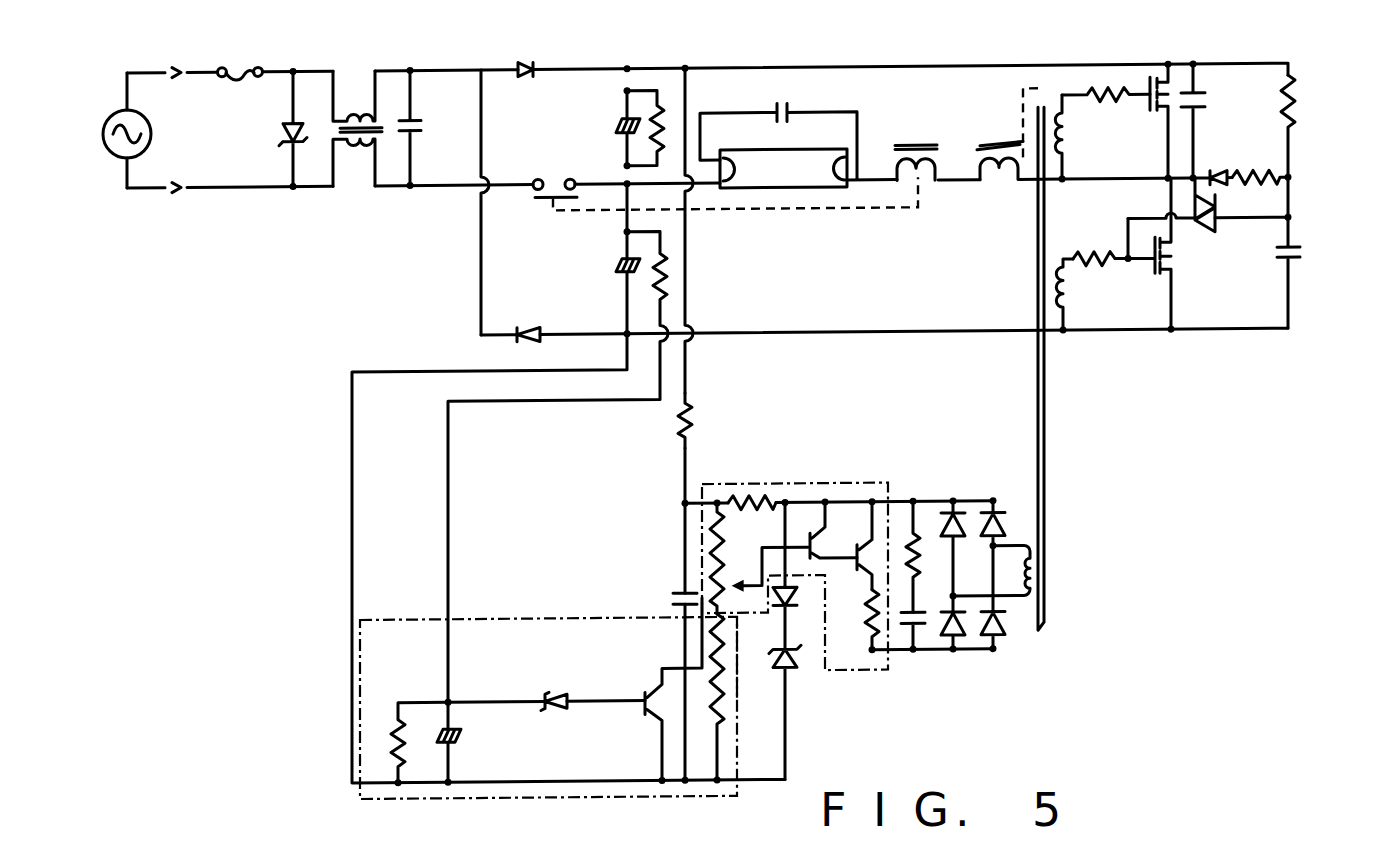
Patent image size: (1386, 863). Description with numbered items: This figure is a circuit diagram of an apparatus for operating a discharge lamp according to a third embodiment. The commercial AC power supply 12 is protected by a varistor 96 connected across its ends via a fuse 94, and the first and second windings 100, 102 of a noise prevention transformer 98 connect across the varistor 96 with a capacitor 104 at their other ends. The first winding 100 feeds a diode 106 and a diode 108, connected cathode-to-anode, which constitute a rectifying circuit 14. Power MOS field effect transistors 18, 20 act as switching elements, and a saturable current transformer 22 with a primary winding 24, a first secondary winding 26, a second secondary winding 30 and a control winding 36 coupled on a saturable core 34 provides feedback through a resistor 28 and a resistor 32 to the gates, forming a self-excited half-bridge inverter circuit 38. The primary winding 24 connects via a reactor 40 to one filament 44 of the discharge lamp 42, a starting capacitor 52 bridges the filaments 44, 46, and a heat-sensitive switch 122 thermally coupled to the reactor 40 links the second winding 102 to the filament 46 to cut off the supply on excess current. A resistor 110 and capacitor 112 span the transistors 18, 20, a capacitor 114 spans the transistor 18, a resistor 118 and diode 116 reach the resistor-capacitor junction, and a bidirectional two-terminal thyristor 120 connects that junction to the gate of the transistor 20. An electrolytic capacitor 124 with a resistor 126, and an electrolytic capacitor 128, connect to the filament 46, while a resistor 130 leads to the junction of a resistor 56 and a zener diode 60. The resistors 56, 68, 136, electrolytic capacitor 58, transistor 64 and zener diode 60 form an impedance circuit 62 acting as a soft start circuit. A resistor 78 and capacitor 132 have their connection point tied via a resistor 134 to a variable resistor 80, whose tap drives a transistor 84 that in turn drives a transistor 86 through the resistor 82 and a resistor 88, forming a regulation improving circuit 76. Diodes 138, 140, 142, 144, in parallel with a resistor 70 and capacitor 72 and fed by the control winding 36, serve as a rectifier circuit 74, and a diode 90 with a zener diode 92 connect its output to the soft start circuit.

The commercial AC power supply 12 is at (107, 113).
The rectifying circuit 14 is at (500, 100).
The field effect transistor 18 is at (1147, 82).
The field effect transistor 20 is at (1152, 276).
The saturable current transformer 22 is at (1048, 345).
The primary winding 24 is at (997, 186).
The first secondary winding 26 is at (1058, 130).
The resistor 28 is at (1097, 97).
The second secondary winding 30 is at (1062, 292).
The resistor 32 is at (1095, 255).
The saturable core 34 is at (1044, 416).
The control winding 36 is at (1044, 579).
The inverter circuit 38 is at (1030, 160).
The reactor 40 is at (910, 148).
The discharge lamp 42 is at (795, 192).
The filament 44 is at (832, 192).
The filament 46 is at (733, 192).
The starting capacitor 52 is at (790, 116).
The resistor 56 is at (397, 720).
The electrolytic capacitor 58 is at (458, 742).
The zener diode 60 is at (553, 694).
The impedance circuit 62 is at (403, 618).
The transistor 64 is at (643, 692).
The resistor 68 is at (722, 706).
The resistor 70 is at (910, 560).
The capacitor 72 is at (922, 632).
The rectifier circuit 74 is at (978, 573).
The regulation improving circuit 76 is at (890, 484).
The resistor 78 is at (695, 422).
The variable resistor 80 is at (730, 586).
The resistor 82 is at (752, 497).
The transistor 84 is at (805, 538).
The transistor 86 is at (855, 550).
The resistor 88 is at (870, 612).
The diode 90 is at (800, 612).
The zener diode 92 is at (788, 672).
The fuse 94 is at (243, 72).
The varistor 96 is at (287, 135).
The transformer 98 is at (373, 135).
The first winding 100 is at (350, 112).
The second winding 102 is at (357, 152).
The capacitor 104 is at (417, 120).
The diode 106 is at (528, 64).
The diode 108 is at (532, 330).
The resistor 110 is at (1292, 115).
The capacitor 112 is at (1292, 254).
The capacitor 114 is at (1203, 98).
The diode 116 is at (1224, 175).
The resistor 118 is at (1258, 172).
The bidirectional two-terminal thyristor 120 is at (1215, 240).
The heat-sensitive switch 122 is at (552, 197).
The electrolytic capacitor 124 is at (620, 123).
The resistor 126 is at (660, 127).
The electrolytic capacitor 128 is at (622, 263).
The resistor 130 is at (667, 280).
The capacitor 132 is at (673, 606).
The resistor 134 is at (710, 538).
The resistor 136 is at (728, 642).
The diode 138 is at (965, 517).
The diode 140 is at (960, 656).
The diode 142 is at (995, 508).
The diode 144 is at (1000, 642).